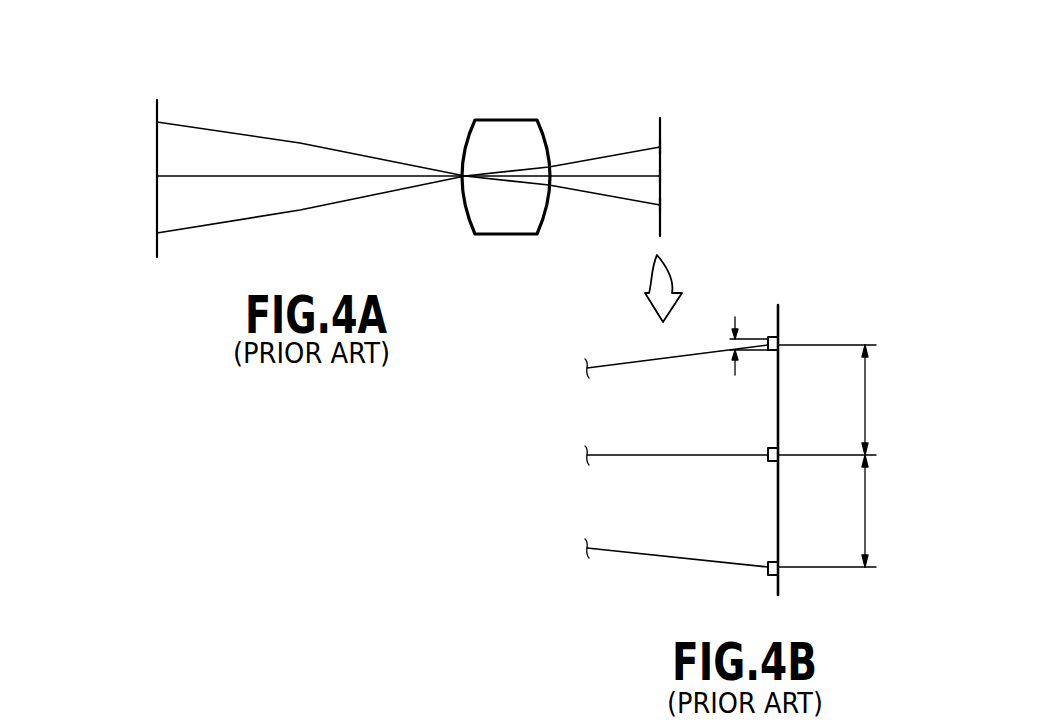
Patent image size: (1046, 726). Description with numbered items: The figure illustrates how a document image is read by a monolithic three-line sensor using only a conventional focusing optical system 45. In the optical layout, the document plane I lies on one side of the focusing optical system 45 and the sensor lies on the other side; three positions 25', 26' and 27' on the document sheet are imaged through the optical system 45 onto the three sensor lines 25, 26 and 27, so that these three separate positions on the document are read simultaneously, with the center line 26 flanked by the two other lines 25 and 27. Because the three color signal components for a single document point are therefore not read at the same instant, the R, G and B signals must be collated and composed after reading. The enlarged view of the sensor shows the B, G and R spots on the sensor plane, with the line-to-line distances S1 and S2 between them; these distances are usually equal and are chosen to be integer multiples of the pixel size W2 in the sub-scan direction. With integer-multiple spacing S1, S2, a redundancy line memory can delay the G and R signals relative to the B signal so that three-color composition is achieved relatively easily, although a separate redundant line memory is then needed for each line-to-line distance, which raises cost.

In FIG. 4A, the object plane I is at (157, 107).
In FIG. 4A, the position on the document sheet 25' is at (364, 199).
In FIG. 4A, the position on the document sheet 26' is at (364, 178).
In FIG. 4A, the position on the document sheet 27' is at (364, 157).
In FIG. 4A, the conventional focusing optical system 45 is at (502, 137).
In FIG. 4A, the line of the monolithic 3-line sensor 25 is at (704, 140).
In FIG. 4A, the center line of the monolithic 3-line sensor 26 is at (704, 180).
In FIG. 4A, the line of the monolithic 3-line sensor 27 is at (704, 217).
In FIG. 4B, the B signal B is at (681, 343).
In FIG. 4B, the G signal G is at (681, 443).
In FIG. 4B, the R signal R is at (681, 555).
In FIG. 4B, the pixel size in the sub-scan direction W2 is at (729, 339).
In FIG. 4B, the line-to-line distance S1 is at (878, 400).
In FIG. 4B, the line-to-line distance S2 is at (878, 511).